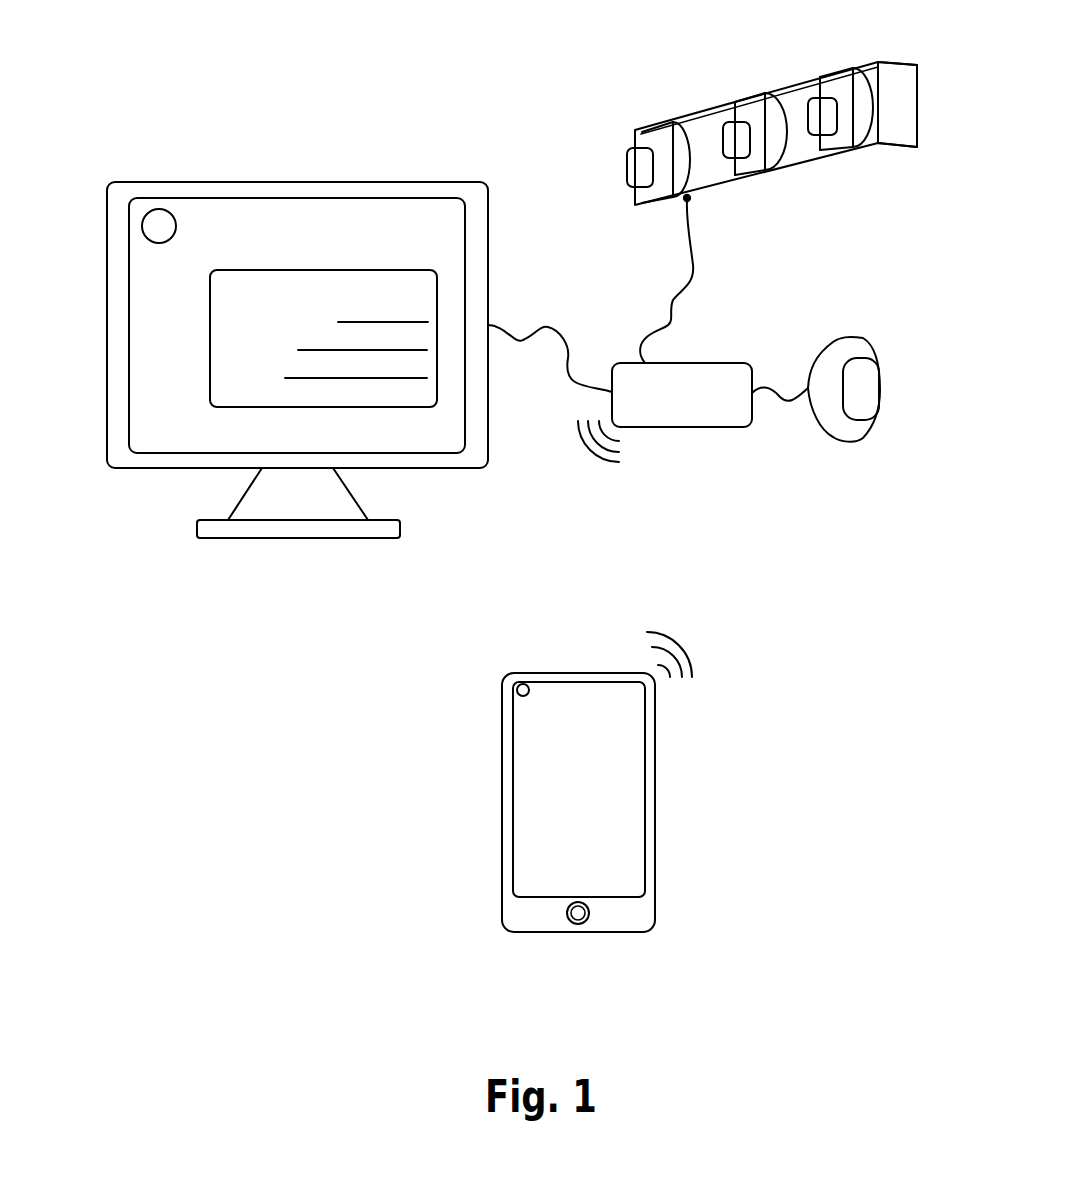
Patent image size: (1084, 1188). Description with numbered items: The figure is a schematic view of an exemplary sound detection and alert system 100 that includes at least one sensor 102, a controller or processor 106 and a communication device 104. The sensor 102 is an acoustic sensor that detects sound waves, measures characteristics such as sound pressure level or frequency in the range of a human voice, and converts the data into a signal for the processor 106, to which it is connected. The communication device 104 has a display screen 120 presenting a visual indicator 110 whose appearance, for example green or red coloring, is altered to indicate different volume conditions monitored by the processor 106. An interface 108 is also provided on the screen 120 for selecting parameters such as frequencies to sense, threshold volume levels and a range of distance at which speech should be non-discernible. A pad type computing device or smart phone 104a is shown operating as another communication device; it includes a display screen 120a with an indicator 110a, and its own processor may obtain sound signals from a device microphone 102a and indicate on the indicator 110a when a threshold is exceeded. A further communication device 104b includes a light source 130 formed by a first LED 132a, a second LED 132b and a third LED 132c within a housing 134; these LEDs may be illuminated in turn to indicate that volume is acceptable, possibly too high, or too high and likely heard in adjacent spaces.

The sound detection and alert system 100 is at (536, 114).
The sensor 102 is at (843, 338).
The device microphone 102a is at (590, 911).
The communication device 104 is at (340, 218).
The pad type computing device or smart phone 104a is at (609, 749).
The communication device 104b is at (782, 145).
The processor 106 is at (680, 363).
The interface 108 is at (212, 355).
The visual indicator 110 is at (158, 207).
The indicator 110a is at (523, 684).
The display screen 120 is at (227, 208).
The display screen 120a is at (565, 688).
The light source 130 is at (760, 158).
The first LED 132a is at (673, 178).
The second LED 132b is at (765, 157).
The third LED 132c is at (853, 133).
The housing 134 is at (897, 80).